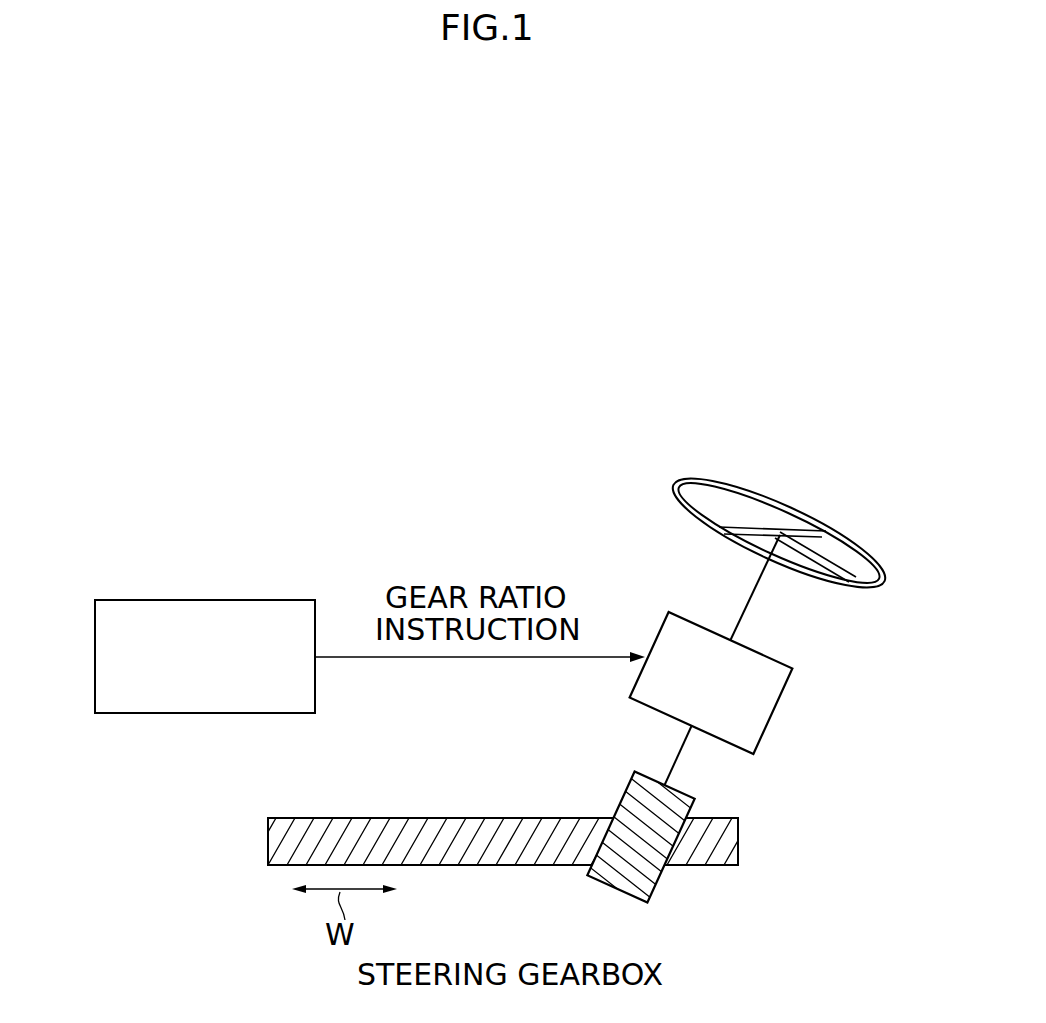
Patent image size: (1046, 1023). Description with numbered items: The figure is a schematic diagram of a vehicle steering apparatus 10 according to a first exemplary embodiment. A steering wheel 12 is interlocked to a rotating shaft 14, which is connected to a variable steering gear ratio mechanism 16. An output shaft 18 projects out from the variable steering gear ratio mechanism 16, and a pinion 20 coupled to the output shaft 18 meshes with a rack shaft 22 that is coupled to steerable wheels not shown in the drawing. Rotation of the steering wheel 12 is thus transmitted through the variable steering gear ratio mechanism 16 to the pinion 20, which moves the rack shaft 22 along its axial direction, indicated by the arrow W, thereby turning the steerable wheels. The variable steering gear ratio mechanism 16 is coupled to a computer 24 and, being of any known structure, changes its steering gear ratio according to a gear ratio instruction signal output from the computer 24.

The vehicle steering apparatus 10 is at (325, 471).
The steering wheel 12 is at (818, 522).
The rotating shaft 14 is at (748, 603).
The variable steering gear ratio mechanism 16 is at (775, 705).
The output shaft 18 is at (670, 758).
The pinion 20 is at (660, 880).
The rack shaft 22 is at (390, 818).
The computer 24 is at (208, 600).